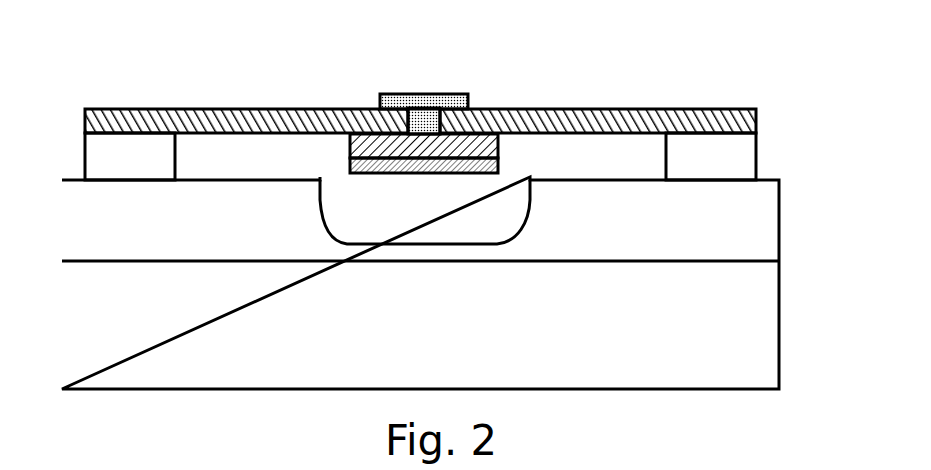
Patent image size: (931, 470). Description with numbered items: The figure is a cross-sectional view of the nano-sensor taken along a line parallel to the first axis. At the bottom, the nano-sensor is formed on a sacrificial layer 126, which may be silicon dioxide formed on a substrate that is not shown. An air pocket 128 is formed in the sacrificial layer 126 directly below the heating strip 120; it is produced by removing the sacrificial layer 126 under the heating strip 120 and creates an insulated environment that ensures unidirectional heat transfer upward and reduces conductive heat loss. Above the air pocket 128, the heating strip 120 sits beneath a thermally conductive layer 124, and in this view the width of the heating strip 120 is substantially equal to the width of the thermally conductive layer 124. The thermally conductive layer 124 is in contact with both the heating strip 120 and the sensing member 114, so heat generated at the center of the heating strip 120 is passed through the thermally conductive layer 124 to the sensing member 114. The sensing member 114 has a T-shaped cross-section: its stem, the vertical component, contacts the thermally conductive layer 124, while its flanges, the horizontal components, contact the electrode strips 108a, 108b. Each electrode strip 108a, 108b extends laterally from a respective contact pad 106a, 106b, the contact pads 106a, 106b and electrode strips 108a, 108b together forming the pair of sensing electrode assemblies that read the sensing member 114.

The contact pad 106a is at (130, 156).
The contact pad 106b is at (711, 156).
The electrode strip 108a is at (185, 112).
The electrode strip 108b is at (598, 130).
The sensing member 114 is at (425, 116).
The heating strip 120 is at (373, 165).
The thermally conductive layer 124 is at (420, 150).
The sacrificial layer 126 is at (742, 215).
The air pocket 128 is at (487, 197).